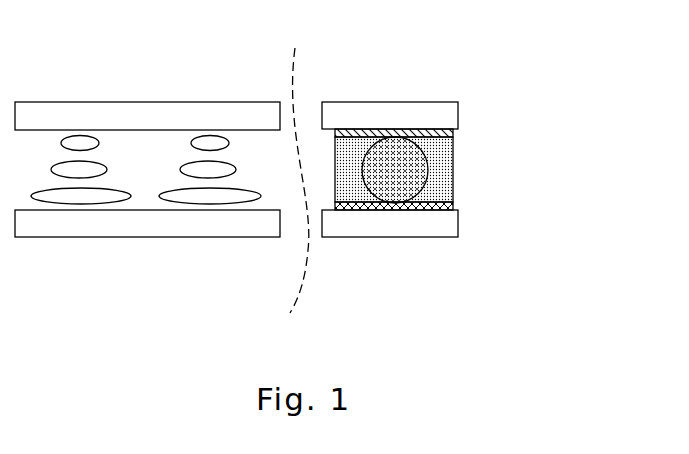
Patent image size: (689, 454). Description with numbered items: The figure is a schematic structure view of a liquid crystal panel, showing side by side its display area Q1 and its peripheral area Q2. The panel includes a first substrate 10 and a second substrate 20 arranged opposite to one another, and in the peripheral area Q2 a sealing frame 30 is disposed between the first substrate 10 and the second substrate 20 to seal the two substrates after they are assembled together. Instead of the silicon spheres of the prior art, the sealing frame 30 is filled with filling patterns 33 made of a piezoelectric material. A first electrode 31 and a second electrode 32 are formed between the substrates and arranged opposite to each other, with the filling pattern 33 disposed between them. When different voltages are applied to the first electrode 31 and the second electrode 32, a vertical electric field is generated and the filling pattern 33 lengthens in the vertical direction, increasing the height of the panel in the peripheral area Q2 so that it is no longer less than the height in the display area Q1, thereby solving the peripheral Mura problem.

The first substrate 10 is at (422, 223).
The second substrate 20 is at (434, 117).
The sealing frame 30 is at (462, 177).
The first electrode 31 is at (370, 204).
The second electrode 32 is at (440, 137).
The filling pattern 33 is at (412, 173).
The display area Q1 is at (160, 93).
The peripheral area Q2 is at (400, 95).